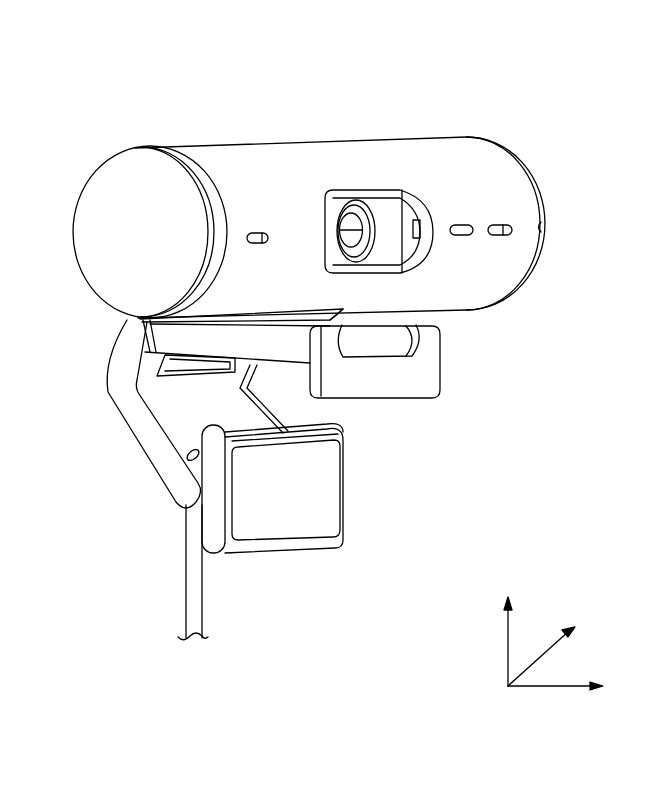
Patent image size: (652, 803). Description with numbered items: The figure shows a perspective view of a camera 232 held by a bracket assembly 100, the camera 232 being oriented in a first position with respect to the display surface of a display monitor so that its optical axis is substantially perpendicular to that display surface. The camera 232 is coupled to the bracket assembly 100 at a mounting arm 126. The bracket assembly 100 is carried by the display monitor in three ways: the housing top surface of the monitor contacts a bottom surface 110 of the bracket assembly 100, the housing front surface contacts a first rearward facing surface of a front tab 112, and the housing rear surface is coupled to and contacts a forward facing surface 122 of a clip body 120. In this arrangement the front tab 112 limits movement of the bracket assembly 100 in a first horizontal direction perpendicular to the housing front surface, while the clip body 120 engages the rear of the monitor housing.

The bracket assembly 100 is at (108, 100).
The camera 232 is at (393, 148).
The bottom surface 110 is at (212, 332).
The front tab 112 is at (392, 380).
The mounting arm 126 is at (388, 340).
The clip body 120 is at (349, 604).
The forward facing surface 122 is at (320, 505).